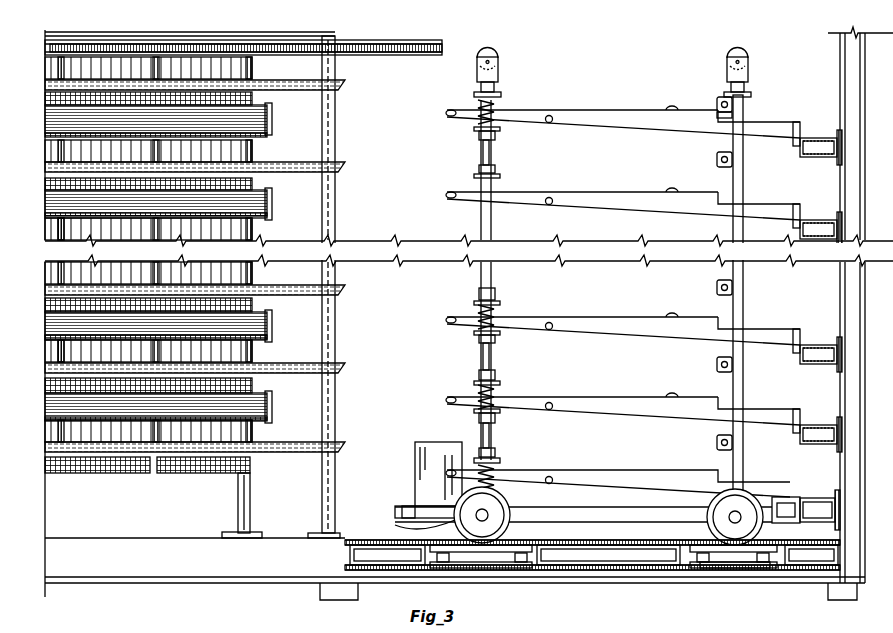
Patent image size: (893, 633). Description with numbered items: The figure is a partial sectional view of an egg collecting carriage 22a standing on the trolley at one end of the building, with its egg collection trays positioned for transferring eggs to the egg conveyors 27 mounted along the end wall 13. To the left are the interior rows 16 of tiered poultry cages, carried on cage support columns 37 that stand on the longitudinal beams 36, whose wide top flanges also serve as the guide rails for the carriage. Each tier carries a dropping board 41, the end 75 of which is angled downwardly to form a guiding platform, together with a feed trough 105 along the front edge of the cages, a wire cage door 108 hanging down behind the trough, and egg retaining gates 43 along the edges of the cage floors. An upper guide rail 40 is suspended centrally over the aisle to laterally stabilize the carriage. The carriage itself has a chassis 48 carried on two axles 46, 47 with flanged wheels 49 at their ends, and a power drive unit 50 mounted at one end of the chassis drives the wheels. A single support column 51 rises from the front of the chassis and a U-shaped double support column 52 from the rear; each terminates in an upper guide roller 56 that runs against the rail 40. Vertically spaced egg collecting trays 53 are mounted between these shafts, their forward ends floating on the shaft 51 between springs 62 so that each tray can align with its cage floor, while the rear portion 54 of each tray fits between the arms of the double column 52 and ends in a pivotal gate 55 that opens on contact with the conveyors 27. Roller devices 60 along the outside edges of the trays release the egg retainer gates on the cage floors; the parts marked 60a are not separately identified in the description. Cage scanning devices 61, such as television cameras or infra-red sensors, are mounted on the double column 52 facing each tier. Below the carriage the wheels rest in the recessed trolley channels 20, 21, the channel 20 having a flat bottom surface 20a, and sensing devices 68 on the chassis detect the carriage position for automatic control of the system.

The upper guide rail 40 is at (442, 44).
The egg retaining gate 43 is at (245, 97).
The end of the dropping boards 75 is at (271, 121).
The cage door 108 is at (240, 143).
The dropping board 41 is at (270, 200).
The interior rows of poultry cages 16 is at (62, 240).
The feed trough 105 is at (345, 90).
The cage support column 37 is at (250, 507).
The longitudinal beam 36 is at (207, 568).
The end wall 13 is at (845, 75).
The U-shaped double support column 52 is at (733, 227).
The upper guide roller 56 is at (500, 70).
The single support column 51 is at (481, 225).
The springs 62 is at (478, 182).
The egg collecting tray 53 is at (597, 110).
The rear portion of the tray 54 is at (797, 191).
The pivotal gate 55 is at (800, 136).
The egg conveyor 27 is at (815, 150).
The roller device 60 is at (549, 123).
The pivot knob 60a is at (672, 190).
The cage scanning device 61 is at (717, 104).
The egg collecting carriage 22a is at (429, 408).
The power drive unit 50 is at (415, 460).
The carriage chassis 48 is at (605, 512).
The sensing device 68 is at (402, 510).
The flanged wheel 49 is at (420, 524).
The axle 46 is at (488, 512).
The axle 47 is at (729, 519).
The trolley channel 21 is at (500, 565).
The trolley channel 20 is at (714, 570).
The flat bottom surface 20a is at (745, 570).